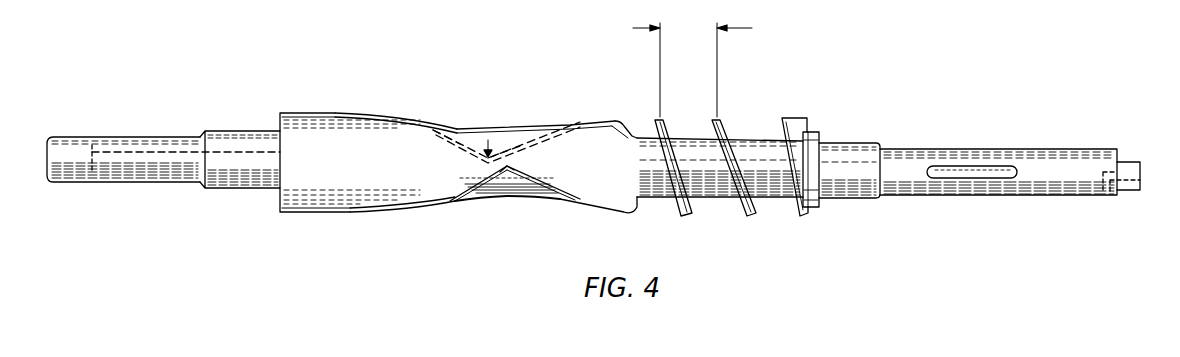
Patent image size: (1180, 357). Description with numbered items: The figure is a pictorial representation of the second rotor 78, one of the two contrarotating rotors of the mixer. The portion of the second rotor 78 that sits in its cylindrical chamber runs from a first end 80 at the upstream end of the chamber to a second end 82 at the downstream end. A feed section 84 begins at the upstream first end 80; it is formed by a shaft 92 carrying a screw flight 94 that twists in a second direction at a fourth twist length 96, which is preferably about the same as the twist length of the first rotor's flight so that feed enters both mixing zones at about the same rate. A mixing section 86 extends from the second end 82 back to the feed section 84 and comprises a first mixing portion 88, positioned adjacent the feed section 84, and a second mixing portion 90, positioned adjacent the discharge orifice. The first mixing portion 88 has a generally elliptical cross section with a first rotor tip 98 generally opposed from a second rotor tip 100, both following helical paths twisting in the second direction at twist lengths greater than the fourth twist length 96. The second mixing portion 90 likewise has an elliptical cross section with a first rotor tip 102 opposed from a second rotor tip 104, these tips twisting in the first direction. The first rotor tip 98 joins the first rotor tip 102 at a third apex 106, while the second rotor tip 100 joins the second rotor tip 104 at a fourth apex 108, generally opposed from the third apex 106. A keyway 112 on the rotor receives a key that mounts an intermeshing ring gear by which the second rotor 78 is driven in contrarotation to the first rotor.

The second rotor 78 is at (862, 130).
The first end 80 is at (808, 128).
The second end 82 is at (282, 112).
The feed section 84 is at (723, 98).
The mixing section 86 is at (477, 104).
The first mixing portion 88 is at (590, 124).
The second mixing portion 90 is at (407, 118).
The shaft 92 is at (780, 198).
The screw flight 94 is at (755, 216).
The fourth twist length 96 is at (692, 69).
The first rotor tip 98 is at (548, 200).
The second rotor tip 100 is at (538, 126).
The first rotor tip 102 is at (455, 201).
The second rotor tip 104 is at (457, 128).
The third apex 106 is at (507, 170).
The fourth apex 108 is at (494, 128).
The keyway 112 is at (977, 173).